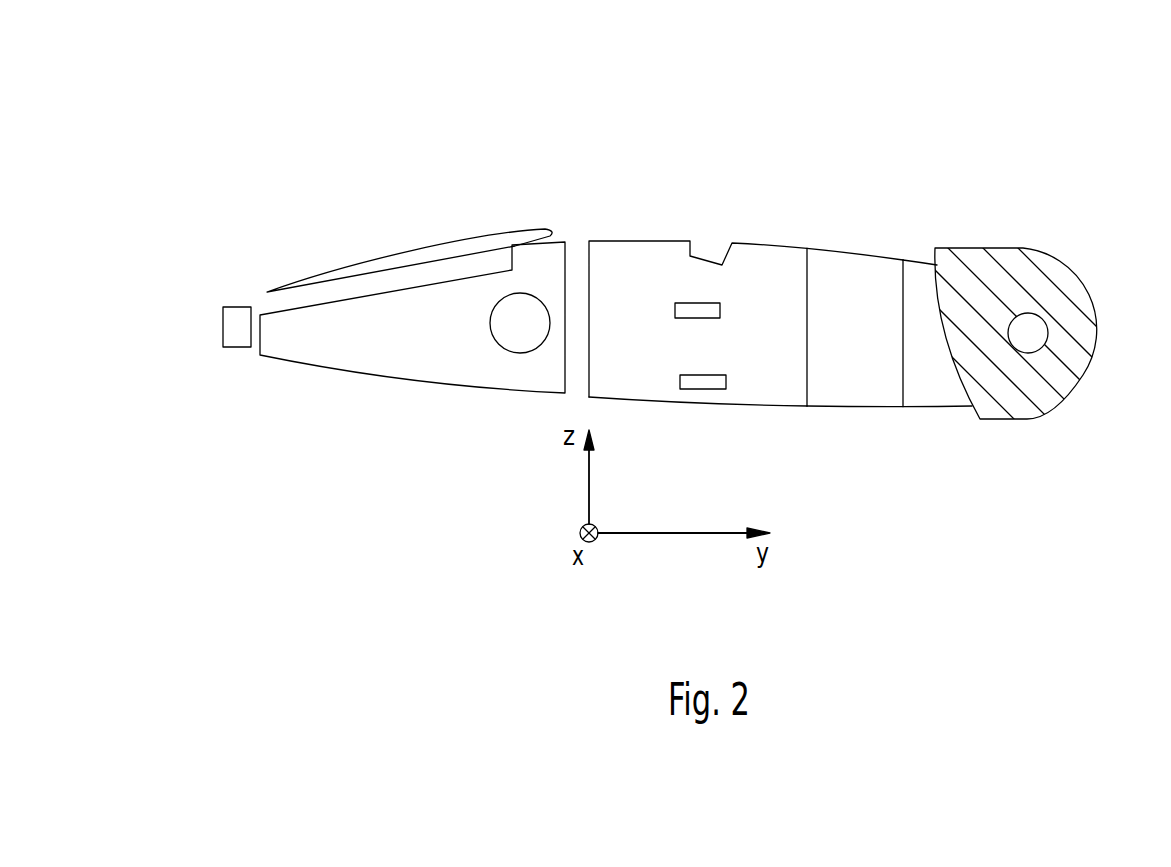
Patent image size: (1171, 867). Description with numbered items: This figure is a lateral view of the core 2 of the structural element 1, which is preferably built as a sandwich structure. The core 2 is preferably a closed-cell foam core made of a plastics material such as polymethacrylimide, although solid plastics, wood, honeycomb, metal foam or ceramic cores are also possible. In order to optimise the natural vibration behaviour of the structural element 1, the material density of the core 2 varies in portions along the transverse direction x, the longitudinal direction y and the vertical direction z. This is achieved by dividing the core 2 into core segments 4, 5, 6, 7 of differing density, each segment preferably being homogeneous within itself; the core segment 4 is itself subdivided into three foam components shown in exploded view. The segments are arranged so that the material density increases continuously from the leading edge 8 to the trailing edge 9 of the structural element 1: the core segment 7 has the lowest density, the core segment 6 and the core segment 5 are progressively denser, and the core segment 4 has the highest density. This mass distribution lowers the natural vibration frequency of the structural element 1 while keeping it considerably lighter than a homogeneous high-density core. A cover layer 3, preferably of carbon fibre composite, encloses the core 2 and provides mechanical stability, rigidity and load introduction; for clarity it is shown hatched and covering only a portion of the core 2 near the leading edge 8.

The structural element 1 is at (277, 112).
The core 2 is at (780, 315).
The cover layer 3 is at (1003, 309).
The core segment 4 is at (370, 373).
The core segment 5 is at (705, 407).
The core segment 6 is at (853, 407).
The core segment 7 is at (935, 407).
The leading edge 8 is at (1100, 320).
The trailing edge 9 is at (223, 327).